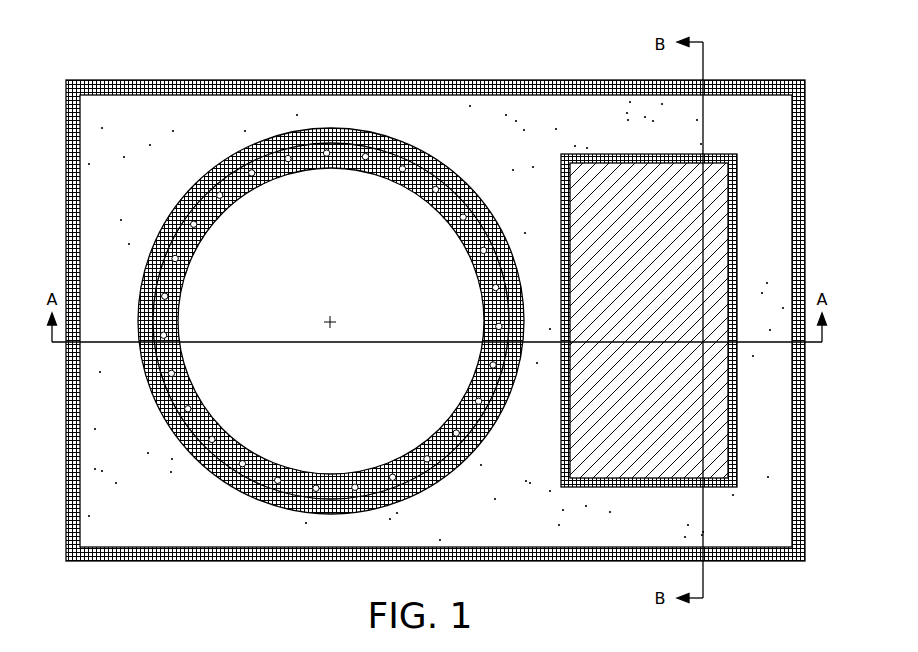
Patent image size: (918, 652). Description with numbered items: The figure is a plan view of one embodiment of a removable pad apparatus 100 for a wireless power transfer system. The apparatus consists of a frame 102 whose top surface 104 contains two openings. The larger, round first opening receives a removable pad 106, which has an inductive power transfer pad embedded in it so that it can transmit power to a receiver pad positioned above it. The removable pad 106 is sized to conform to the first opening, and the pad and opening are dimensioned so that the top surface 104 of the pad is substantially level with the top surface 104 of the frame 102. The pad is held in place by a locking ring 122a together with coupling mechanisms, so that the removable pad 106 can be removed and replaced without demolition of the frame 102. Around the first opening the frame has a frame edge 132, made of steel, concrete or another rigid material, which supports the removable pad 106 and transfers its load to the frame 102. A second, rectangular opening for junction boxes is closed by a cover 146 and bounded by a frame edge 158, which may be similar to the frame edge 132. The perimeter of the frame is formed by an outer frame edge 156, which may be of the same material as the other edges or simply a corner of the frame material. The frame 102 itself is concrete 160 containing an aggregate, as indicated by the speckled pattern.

The removable pad apparatus 100 is at (98, 16).
The frame 102 is at (148, 80).
The top surface 104 is at (133, 186).
The removable pad 106 is at (393, 447).
The locking ring 122a is at (335, 495).
The frame edge for the first opening 132 is at (274, 509).
The cover 146 is at (621, 445).
The outer frame edge 156 is at (208, 565).
The frame edge for the second opening 158 is at (573, 501).
The concrete 160 is at (130, 530).